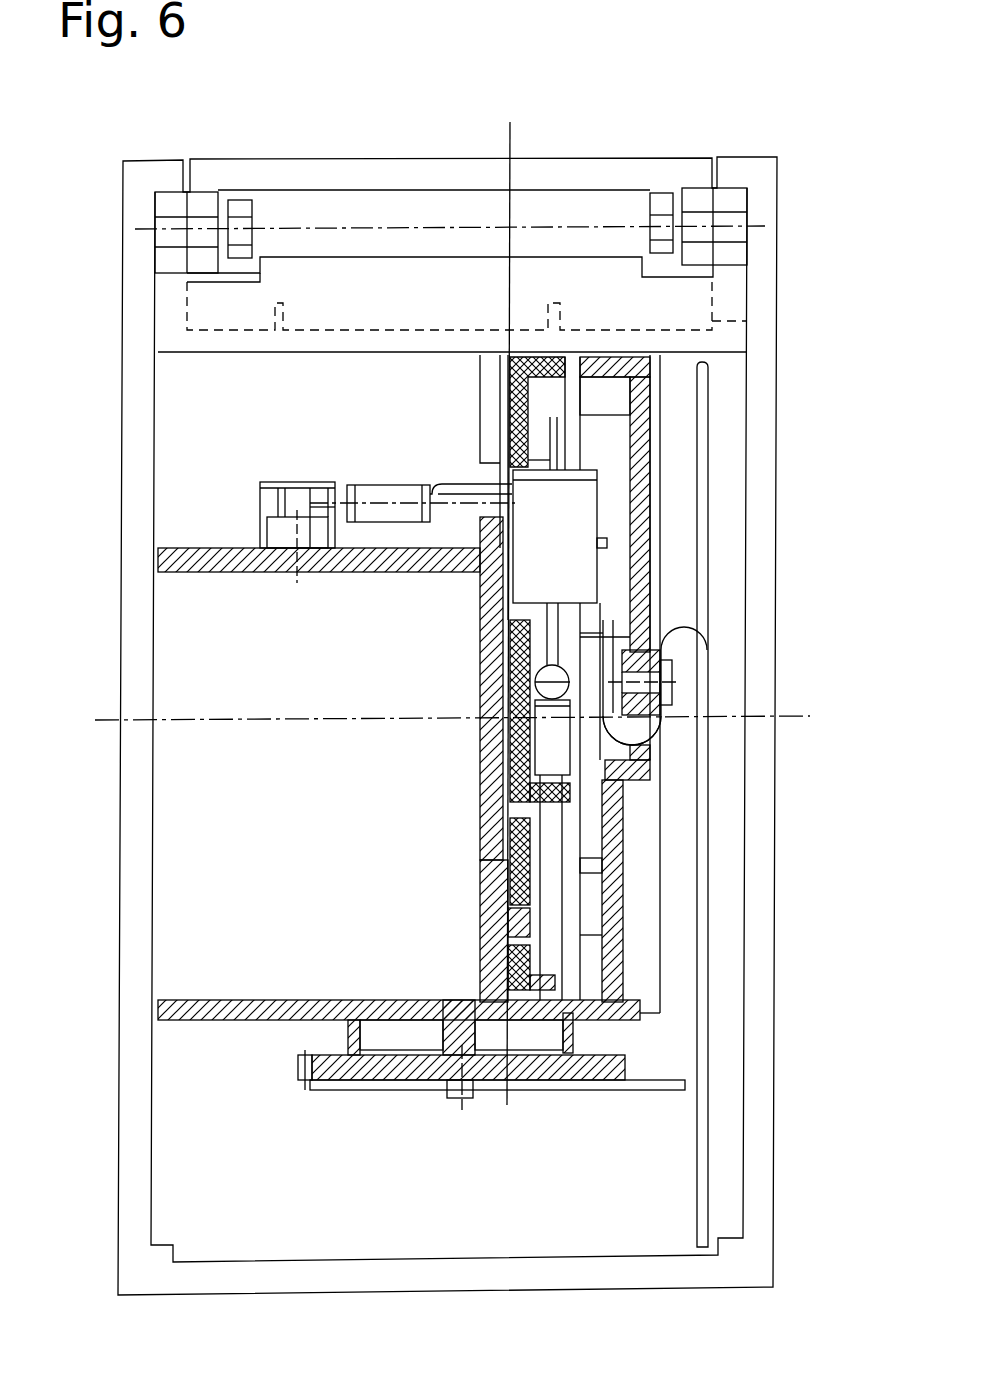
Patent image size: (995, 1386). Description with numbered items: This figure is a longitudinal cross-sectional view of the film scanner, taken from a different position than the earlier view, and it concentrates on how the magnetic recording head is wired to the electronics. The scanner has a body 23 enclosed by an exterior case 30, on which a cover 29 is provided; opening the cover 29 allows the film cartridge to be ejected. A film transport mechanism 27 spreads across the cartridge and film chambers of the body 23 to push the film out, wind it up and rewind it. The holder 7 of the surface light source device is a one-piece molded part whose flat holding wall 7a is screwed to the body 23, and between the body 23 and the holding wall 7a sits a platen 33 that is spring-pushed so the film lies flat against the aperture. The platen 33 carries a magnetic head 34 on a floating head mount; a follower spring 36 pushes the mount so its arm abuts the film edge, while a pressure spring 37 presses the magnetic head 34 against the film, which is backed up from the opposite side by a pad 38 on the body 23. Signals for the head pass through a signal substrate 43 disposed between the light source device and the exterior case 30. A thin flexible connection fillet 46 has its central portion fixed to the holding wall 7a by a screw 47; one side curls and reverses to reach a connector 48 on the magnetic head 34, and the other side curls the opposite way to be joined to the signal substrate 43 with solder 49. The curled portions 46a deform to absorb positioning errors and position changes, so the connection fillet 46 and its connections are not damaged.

The holder 7 is at (635, 897).
The holding wall 7a is at (622, 852).
The body 23 is at (460, 935).
The film transport mechanism 27 is at (555, 1088).
The cover 29 is at (642, 158).
The exterior case 30 is at (772, 272).
The platen 33 is at (497, 858).
The magnetic head 34 is at (500, 598).
The follower spring 36 is at (512, 768).
The pressure spring 37 is at (372, 490).
The pad 38 is at (535, 585).
The signal substrate 43 is at (710, 583).
The connection fillet 46 is at (677, 737).
The curled portions 46a is at (687, 615).
The screw 47 is at (673, 682).
The connector 48 is at (607, 545).
The solder 49 is at (715, 722).